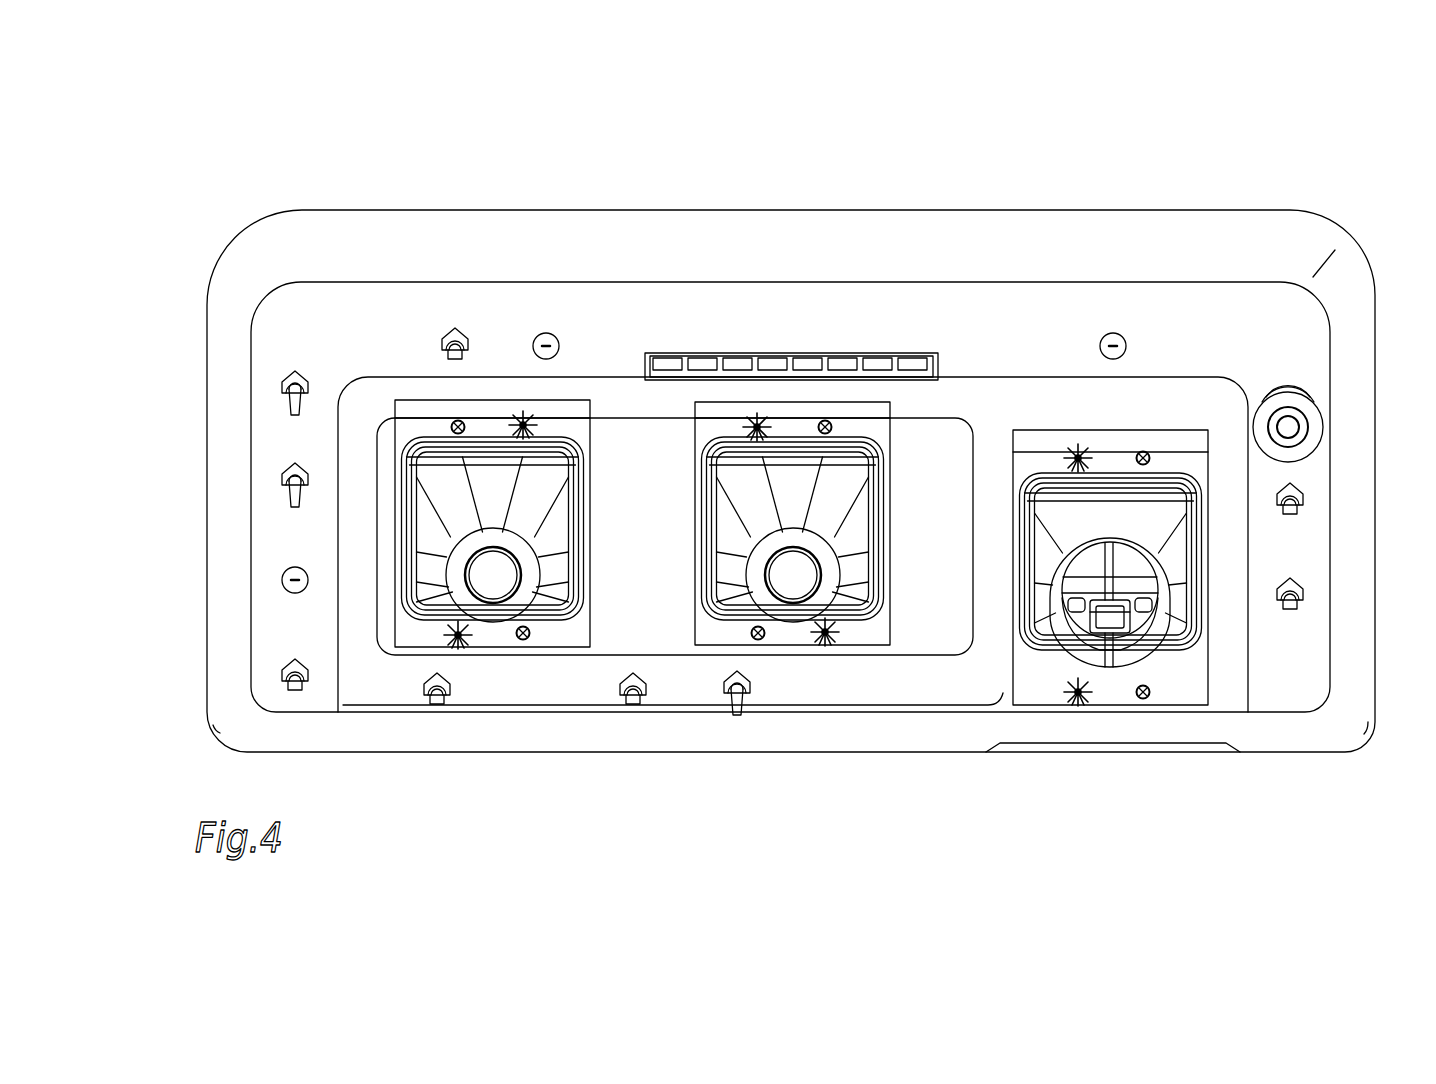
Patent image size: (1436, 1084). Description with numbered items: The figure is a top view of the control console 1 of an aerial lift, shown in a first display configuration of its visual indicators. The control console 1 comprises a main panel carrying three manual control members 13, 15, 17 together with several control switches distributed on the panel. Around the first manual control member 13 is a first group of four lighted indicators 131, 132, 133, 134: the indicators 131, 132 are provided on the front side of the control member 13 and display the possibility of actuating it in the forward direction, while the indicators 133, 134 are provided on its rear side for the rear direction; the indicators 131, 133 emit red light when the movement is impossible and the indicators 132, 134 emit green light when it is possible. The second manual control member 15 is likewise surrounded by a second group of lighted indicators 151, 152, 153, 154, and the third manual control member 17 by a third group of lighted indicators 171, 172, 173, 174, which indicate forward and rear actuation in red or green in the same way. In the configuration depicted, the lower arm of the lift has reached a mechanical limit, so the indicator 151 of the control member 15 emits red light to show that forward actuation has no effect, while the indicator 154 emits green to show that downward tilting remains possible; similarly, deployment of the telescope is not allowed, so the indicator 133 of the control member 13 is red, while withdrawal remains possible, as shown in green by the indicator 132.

The control console 1 is at (903, 130).
The first manual control member 13 is at (497, 573).
The lighted indicator 131 is at (455, 423).
The lighted indicator 132 is at (524, 422).
The lighted indicator 133 is at (456, 638).
The lighted indicator 134 is at (525, 637).
The second manual control member 15 is at (797, 573).
The lighted indicator 151 is at (757, 424).
The lighted indicator 152 is at (825, 424).
The lighted indicator 153 is at (757, 636).
The lighted indicator 154 is at (826, 637).
The third manual control member 17 is at (1123, 652).
The lighted indicator 171 is at (1078, 456).
The lighted indicator 172 is at (1143, 456).
The lighted indicator 173 is at (1075, 693).
The lighted indicator 174 is at (1148, 696).